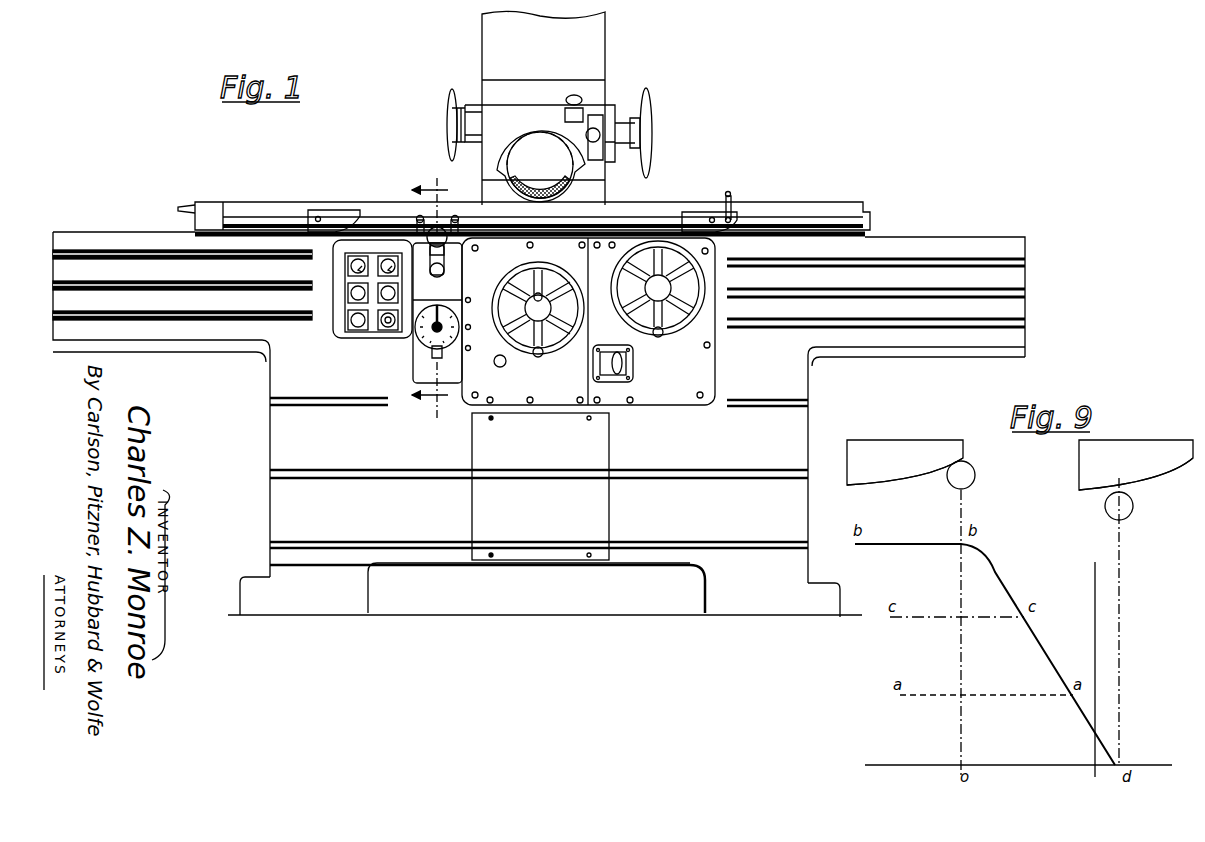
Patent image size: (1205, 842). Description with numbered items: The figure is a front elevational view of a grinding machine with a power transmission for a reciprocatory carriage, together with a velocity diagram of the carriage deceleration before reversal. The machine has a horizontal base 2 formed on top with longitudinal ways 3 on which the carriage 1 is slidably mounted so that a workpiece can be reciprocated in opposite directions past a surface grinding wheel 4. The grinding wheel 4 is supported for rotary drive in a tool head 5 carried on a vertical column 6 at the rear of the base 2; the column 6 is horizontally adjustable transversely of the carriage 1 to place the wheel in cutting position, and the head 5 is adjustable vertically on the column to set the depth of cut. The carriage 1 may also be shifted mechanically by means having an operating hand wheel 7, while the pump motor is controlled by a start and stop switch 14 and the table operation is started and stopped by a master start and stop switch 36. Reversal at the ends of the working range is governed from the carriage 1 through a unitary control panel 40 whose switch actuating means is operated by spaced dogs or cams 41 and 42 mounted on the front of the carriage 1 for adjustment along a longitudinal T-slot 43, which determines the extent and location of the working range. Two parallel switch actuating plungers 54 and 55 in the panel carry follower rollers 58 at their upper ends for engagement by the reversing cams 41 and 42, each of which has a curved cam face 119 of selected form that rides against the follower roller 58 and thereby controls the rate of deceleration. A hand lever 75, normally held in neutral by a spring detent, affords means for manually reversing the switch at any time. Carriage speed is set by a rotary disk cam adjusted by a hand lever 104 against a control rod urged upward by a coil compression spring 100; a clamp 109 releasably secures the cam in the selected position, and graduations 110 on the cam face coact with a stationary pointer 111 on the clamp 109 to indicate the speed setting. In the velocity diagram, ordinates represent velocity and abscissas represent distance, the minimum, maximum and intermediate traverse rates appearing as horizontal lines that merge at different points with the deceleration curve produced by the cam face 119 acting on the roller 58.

In FIG. 1, the carriage 1 is at (787, 210).
In FIG. 1, the base 2 is at (272, 440).
In FIG. 1, the longitudinal ways 3 is at (926, 238).
In FIG. 1, the surface grinding wheel 4 is at (560, 183).
In FIG. 1, the tool head 5 is at (620, 106).
In FIG. 1, the vertical column 6 is at (596, 58).
In FIG. 1, the operating hand wheel 7 is at (660, 338).
In FIG. 1, the start and stop switch 14 is at (388, 325).
In FIG. 1, the master start and stop switch 36 is at (372, 252).
In FIG. 1, the unitary control panel 40 is at (412, 374).
In FIG. 1, the reversing cam 41 is at (334, 220).
In FIG. 9, the reversing cam 41 is at (918, 446).
In FIG. 1, the reversing cam 42 is at (700, 214).
In FIG. 1, the longitudinal T-slot 43 is at (277, 214).
In FIG. 1, the switch actuating plunger 54 is at (420, 232).
In FIG. 1, the switch actuating plunger 55 is at (455, 232).
In FIG. 9, the follower roller 58 is at (973, 474).
In FIG. 1, the hand lever 75 is at (440, 234).
In FIG. 1, the coil compression spring 100 is at (450, 324).
In FIG. 1, the hand lever 104 is at (440, 270).
In FIG. 1, the clamp 109 is at (486, 364).
In FIG. 1, the graduations 110 is at (448, 318).
In FIG. 1, the stationary pointer 111 is at (440, 352).
In FIG. 9, the curved cam face 119 is at (922, 484).